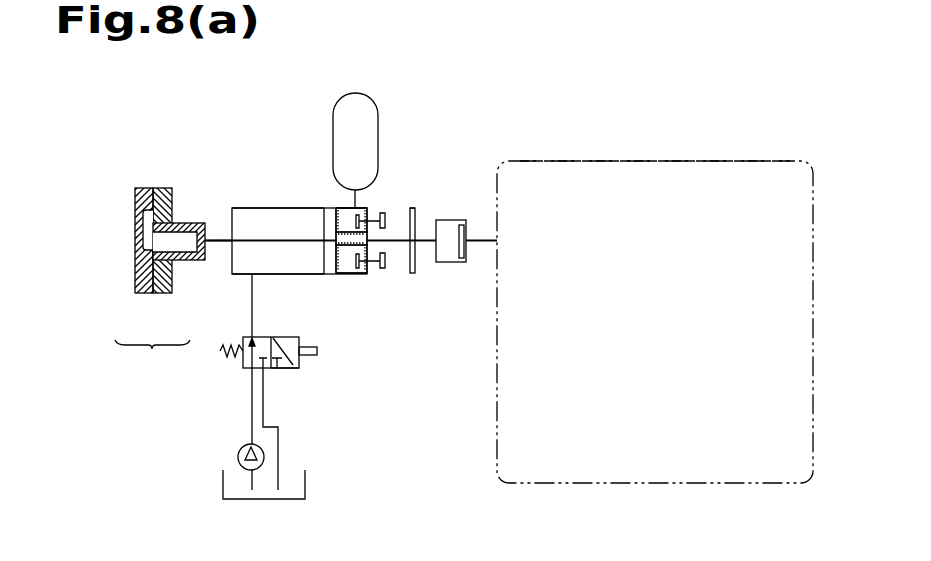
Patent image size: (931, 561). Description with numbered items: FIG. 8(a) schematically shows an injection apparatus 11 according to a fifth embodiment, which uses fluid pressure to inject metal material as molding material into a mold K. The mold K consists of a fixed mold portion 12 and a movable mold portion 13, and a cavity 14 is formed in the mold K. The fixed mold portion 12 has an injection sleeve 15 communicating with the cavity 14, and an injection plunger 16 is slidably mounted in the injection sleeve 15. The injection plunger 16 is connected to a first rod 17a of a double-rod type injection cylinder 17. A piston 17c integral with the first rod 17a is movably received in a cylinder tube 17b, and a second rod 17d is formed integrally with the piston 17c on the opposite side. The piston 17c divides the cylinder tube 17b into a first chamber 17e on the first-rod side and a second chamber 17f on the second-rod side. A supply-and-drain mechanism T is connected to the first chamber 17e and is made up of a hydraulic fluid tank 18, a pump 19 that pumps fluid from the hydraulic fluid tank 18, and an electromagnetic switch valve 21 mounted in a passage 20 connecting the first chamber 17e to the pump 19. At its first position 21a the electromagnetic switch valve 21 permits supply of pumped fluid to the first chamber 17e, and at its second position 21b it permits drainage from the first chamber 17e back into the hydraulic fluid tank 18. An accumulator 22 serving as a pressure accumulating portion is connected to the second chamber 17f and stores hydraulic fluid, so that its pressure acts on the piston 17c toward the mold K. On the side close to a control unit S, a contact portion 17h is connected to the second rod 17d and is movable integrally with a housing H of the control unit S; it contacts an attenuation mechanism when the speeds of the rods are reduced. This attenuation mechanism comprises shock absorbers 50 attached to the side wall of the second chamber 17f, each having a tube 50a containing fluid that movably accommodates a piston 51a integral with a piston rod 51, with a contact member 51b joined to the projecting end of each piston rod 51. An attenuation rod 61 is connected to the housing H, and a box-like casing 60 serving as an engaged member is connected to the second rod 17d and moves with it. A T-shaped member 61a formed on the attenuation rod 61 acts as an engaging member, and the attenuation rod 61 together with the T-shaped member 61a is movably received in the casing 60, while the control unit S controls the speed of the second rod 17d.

The injection apparatus 11 is at (413, 93).
The fixed mold portion 12 is at (168, 293).
The movable mold portion 13 is at (152, 293).
The cavity 14 is at (143, 228).
The injection sleeve 15 is at (187, 222).
The injection plunger 16 is at (210, 237).
The injection cylinder 17 is at (298, 208).
The first rod 17a is at (218, 247).
The cylinder tube 17b is at (267, 274).
The piston 17c is at (325, 252).
The second rod 17d is at (420, 245).
The first chamber 17e is at (249, 211).
The second chamber 17f is at (330, 348).
The contact portion 17h is at (413, 208).
The hydraulic fluid tank 18 is at (305, 482).
The pump 19 is at (238, 450).
The passage 20 is at (253, 392).
The electromagnetic switch valve 21 is at (243, 370).
The first position 21a is at (247, 337).
The second position 21b is at (299, 368).
The accumulator 22 is at (367, 94).
The shock absorber 50 is at (367, 208).
The tube 50a is at (330, 265).
The piston rod 51 is at (373, 268).
The piston 51a is at (352, 221).
The contact member 51b is at (382, 215).
The casing 60 is at (463, 220).
The attenuation rod 61 is at (485, 240).
The T-shaped member 61a is at (470, 252).
The housing H is at (637, 161).
The control unit S is at (808, 152).
The mold K is at (152, 359).
The supply-and-drain mechanism T is at (282, 400).